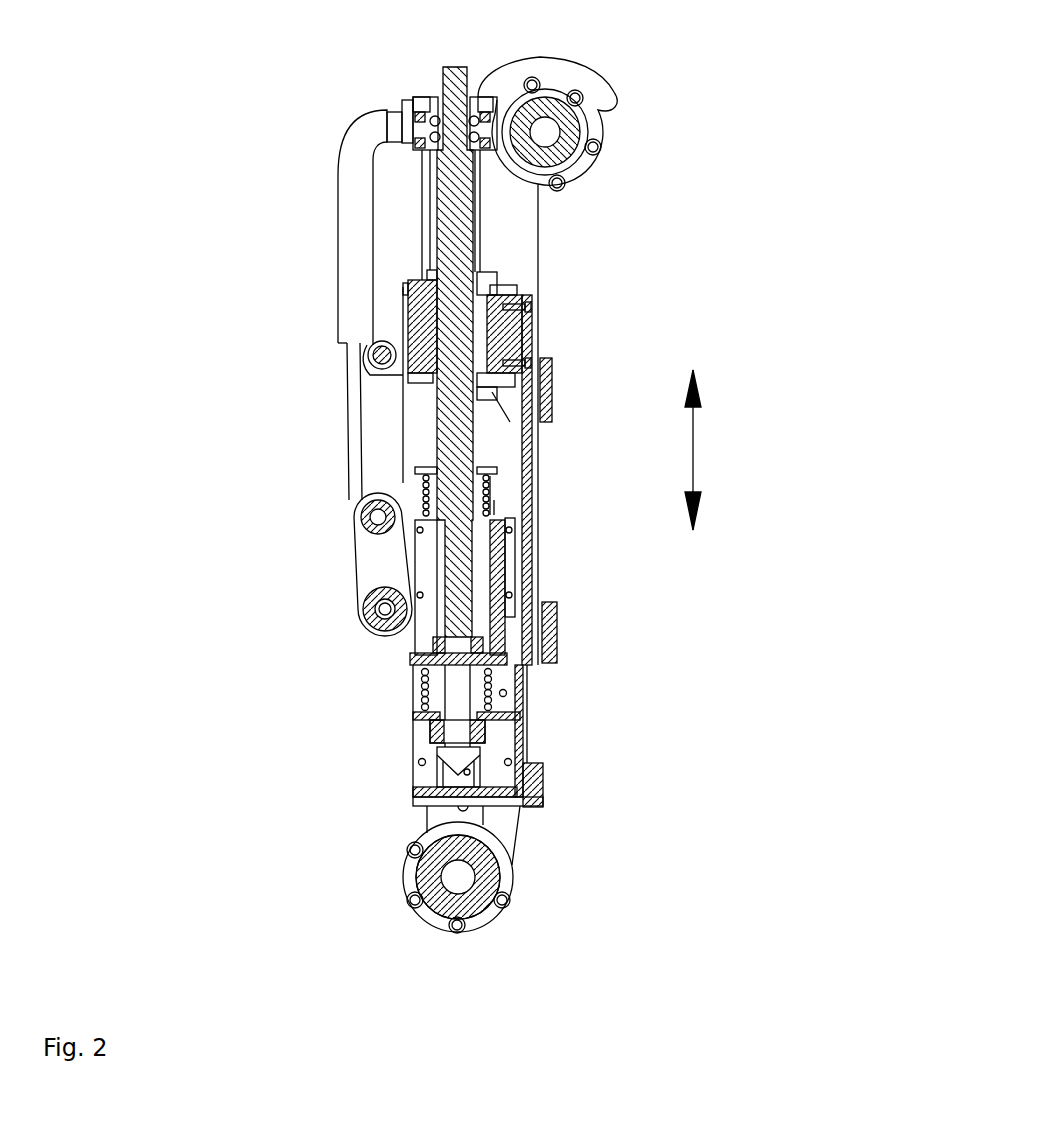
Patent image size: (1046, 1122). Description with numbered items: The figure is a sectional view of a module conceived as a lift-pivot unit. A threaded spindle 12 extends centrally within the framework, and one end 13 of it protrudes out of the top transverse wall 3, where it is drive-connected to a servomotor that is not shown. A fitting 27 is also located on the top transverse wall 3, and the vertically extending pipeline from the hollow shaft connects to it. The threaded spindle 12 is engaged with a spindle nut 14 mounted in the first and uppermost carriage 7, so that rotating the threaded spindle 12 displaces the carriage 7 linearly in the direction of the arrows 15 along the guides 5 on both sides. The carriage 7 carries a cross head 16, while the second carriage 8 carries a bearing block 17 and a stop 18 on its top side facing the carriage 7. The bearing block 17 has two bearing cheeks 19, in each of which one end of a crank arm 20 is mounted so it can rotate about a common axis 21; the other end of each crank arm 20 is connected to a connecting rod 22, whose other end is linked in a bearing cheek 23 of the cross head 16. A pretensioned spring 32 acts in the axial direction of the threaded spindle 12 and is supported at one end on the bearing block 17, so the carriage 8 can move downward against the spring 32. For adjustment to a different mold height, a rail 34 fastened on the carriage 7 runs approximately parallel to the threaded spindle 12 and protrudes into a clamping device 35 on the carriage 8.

The top transverse wall 3 is at (622, 104).
The guide 5 is at (425, 168).
The first carriage 7 is at (549, 420).
The second carriage 8 is at (508, 555).
The threaded spindle 12 is at (457, 225).
The end of threaded spindle 13 is at (440, 85).
The spindle nut 14 is at (478, 290).
The arrows 15 is at (697, 443).
The cross head 16 is at (395, 328).
The bearing block 17 is at (427, 623).
The stop 18 is at (497, 471).
The bearing cheek 19 is at (427, 623).
The crank arm 20 is at (370, 558).
The common axis 21 is at (380, 607).
The connecting rod 22 is at (377, 421).
The bearing cheek 23 is at (410, 315).
The fitting 27 is at (598, 138).
The spring 32 is at (493, 675).
The rail 34 is at (527, 487).
The clamping device 35 is at (543, 603).